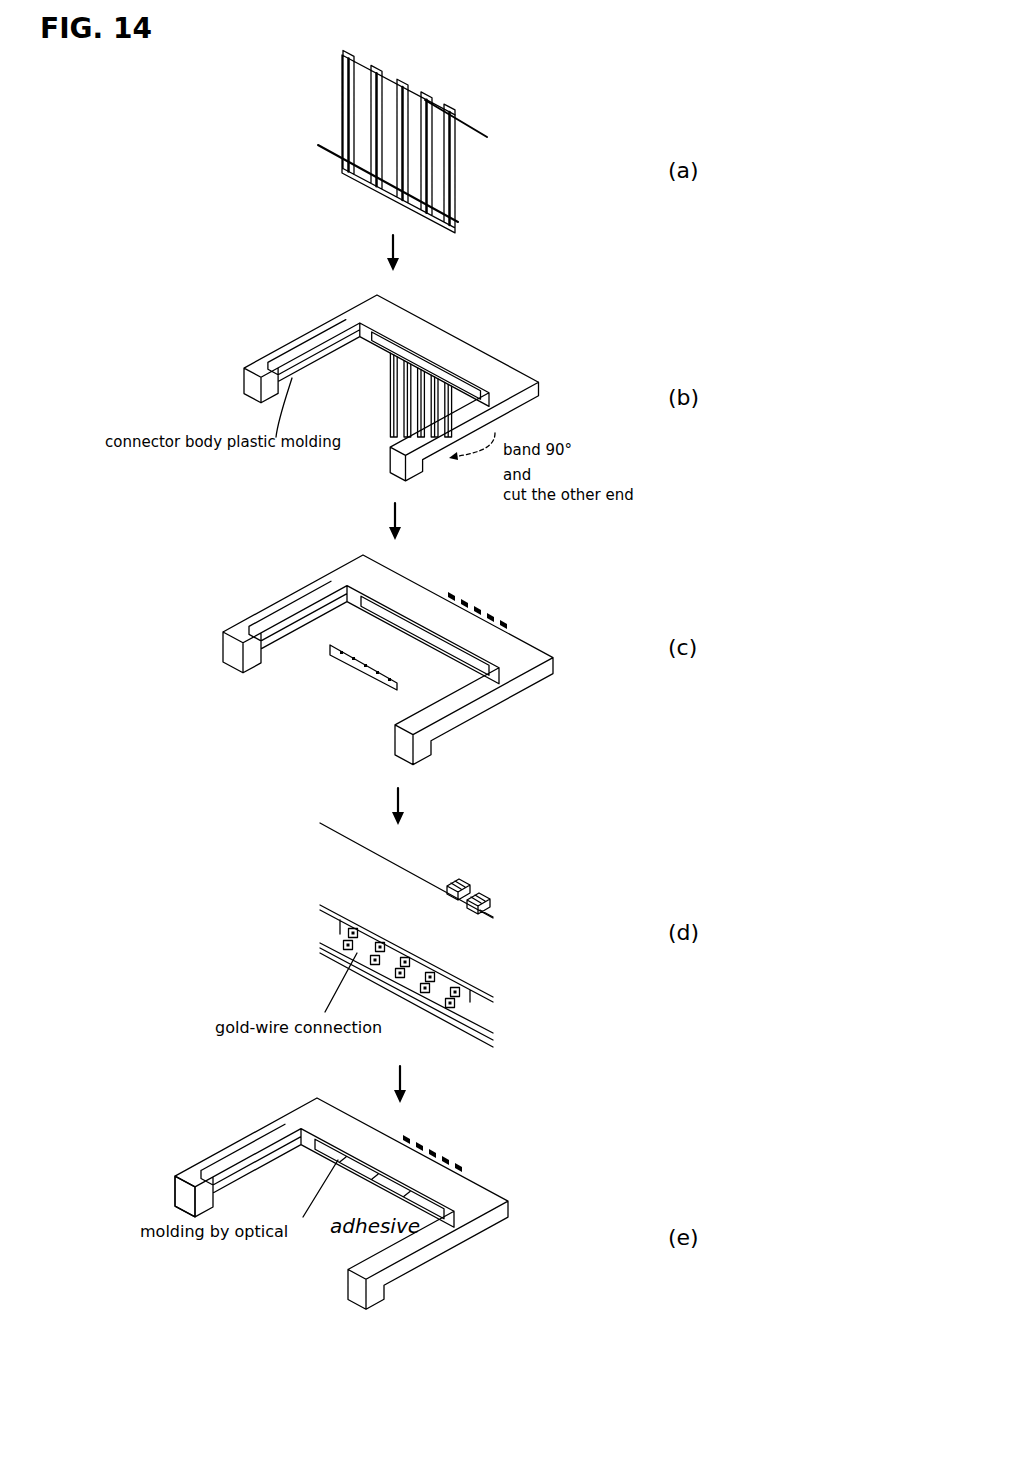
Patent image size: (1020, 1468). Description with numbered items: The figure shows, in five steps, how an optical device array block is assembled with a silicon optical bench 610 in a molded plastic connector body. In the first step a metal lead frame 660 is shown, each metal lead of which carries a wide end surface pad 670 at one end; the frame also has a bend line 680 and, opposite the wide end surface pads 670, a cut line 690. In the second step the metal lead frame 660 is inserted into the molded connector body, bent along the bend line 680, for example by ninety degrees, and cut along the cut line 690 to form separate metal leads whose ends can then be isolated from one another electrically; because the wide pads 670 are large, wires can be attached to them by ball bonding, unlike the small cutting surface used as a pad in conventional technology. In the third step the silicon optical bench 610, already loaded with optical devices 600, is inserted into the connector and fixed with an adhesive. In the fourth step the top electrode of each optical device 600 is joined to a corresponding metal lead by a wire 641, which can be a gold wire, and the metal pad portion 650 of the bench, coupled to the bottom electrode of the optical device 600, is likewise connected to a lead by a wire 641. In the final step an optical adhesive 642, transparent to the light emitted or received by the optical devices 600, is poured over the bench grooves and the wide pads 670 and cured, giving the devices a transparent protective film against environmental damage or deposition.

The optical devices 600 is at (335, 662).
The silicon optical bench 610 is at (355, 670).
The wire 641 is at (337, 927).
The optical adhesive 642 is at (408, 1203).
The metal pad portion 650 is at (198, 1153).
The metal lead frame 660 is at (341, 101).
The wide end surface pad 670 is at (341, 58).
The bend line 680 is at (480, 129).
The cut line 690 is at (458, 222).